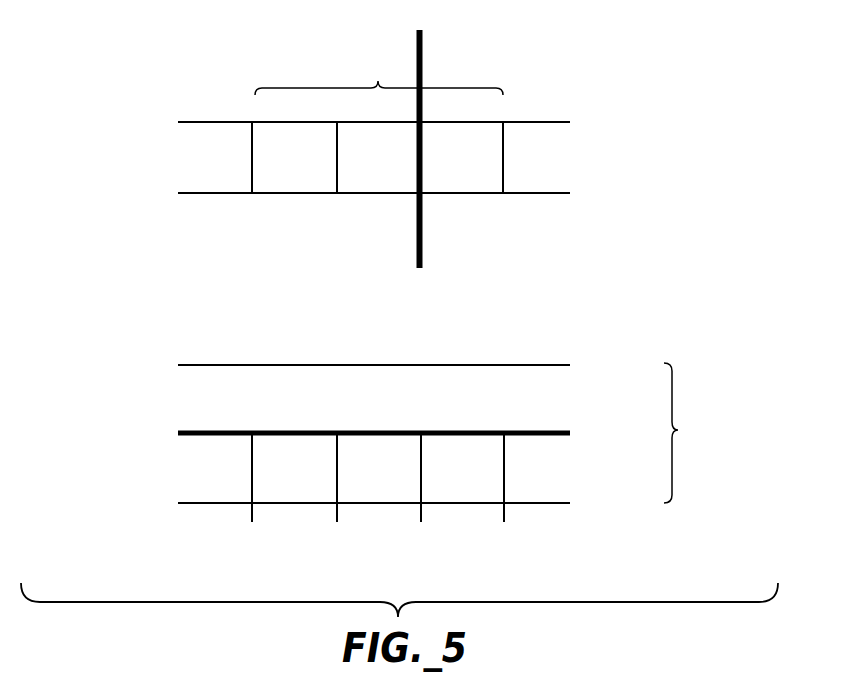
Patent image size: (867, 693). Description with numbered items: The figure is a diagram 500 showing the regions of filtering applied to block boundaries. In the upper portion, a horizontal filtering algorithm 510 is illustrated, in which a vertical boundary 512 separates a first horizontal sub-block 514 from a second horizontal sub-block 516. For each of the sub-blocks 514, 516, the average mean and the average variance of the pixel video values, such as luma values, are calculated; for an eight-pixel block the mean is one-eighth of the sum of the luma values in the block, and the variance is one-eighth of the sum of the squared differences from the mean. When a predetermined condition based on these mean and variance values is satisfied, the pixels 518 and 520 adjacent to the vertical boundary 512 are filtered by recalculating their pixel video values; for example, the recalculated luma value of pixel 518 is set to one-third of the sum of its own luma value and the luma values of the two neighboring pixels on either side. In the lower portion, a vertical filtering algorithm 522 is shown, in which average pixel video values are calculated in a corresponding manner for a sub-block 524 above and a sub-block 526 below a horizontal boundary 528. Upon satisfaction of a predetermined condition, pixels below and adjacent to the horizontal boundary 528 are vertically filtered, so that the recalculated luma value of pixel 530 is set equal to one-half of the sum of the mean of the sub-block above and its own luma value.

The image data processing arrangement 500 is at (449, 149).
The horizontal filtering algorithm 510 is at (377, 124).
The vertical boundary 512 is at (423, 48).
The first horizontal sub-block 514 is at (235, 180).
The second horizontal sub-block 516 is at (528, 170).
The pixel 518 is at (390, 193).
The pixel 520 is at (432, 195).
The vertical filtering algorithm 522 is at (415, 471).
The sub-block 524 is at (182, 399).
The sub-block 526 is at (225, 492).
The horizontal boundary 528 is at (188, 437).
The pixel 530 is at (380, 492).